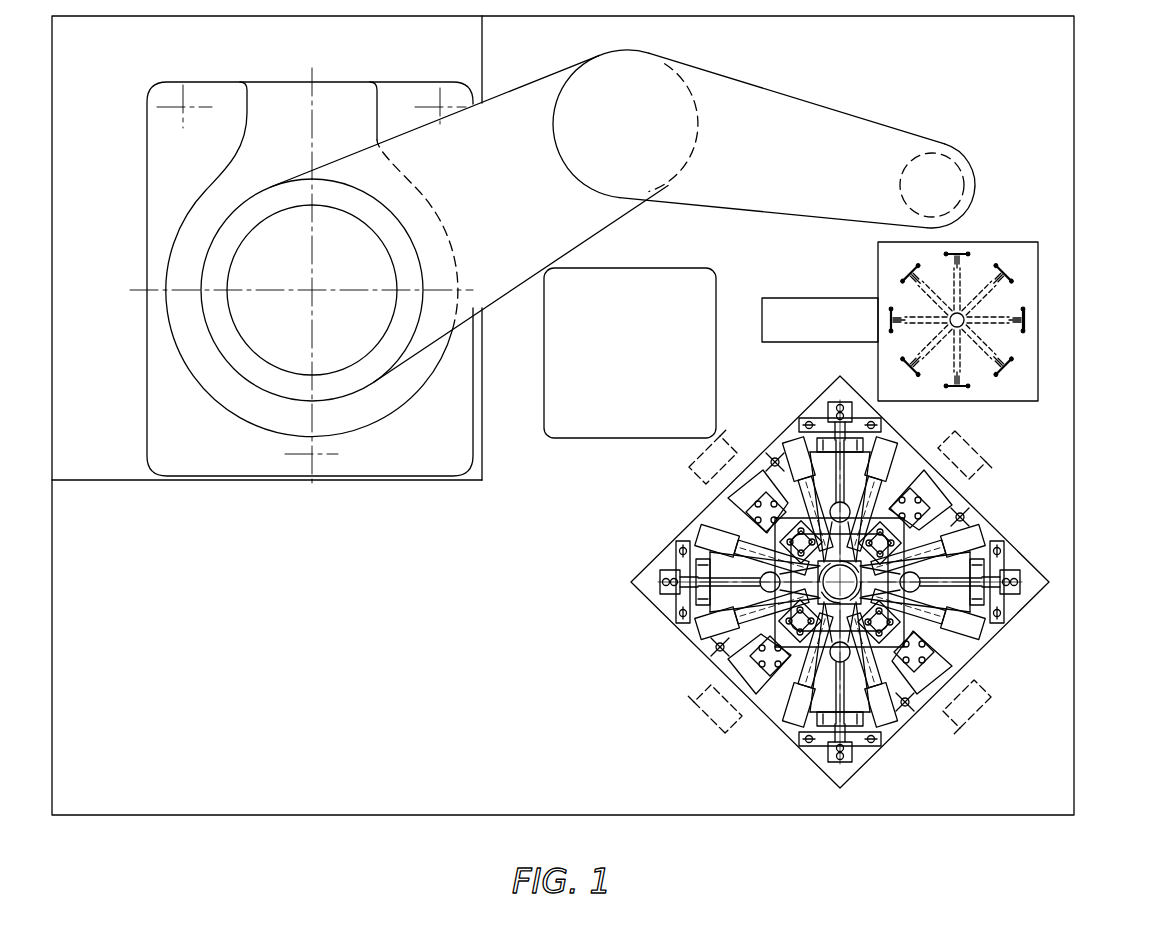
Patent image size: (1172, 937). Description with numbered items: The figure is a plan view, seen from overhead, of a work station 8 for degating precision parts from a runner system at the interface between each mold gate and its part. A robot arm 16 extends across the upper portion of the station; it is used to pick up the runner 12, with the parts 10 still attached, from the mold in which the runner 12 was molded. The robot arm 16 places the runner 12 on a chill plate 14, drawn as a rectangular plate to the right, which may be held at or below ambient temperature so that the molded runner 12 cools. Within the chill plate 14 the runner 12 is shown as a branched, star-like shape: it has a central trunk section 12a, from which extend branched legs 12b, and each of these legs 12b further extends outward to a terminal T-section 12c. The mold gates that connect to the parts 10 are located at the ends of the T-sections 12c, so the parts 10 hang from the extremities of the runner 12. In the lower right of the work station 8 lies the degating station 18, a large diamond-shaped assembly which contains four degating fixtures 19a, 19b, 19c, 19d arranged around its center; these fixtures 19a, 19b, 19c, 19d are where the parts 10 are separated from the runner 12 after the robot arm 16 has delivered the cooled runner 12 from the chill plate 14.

The work station 8 is at (1080, 748).
The parts 10 is at (1018, 354).
The runner 12 is at (973, 357).
The trunk section 12a is at (947, 332).
The branched legs 12b is at (996, 291).
The terminal T-sections 12c is at (1003, 366).
The chill plate 14 is at (994, 238).
The robot arm 16 is at (884, 114).
The degating station 18 is at (876, 583).
The degating fixture 19a is at (952, 632).
The degating fixture 19b is at (883, 725).
The degating fixture 19c is at (705, 625).
The degating fixture 19d is at (797, 468).